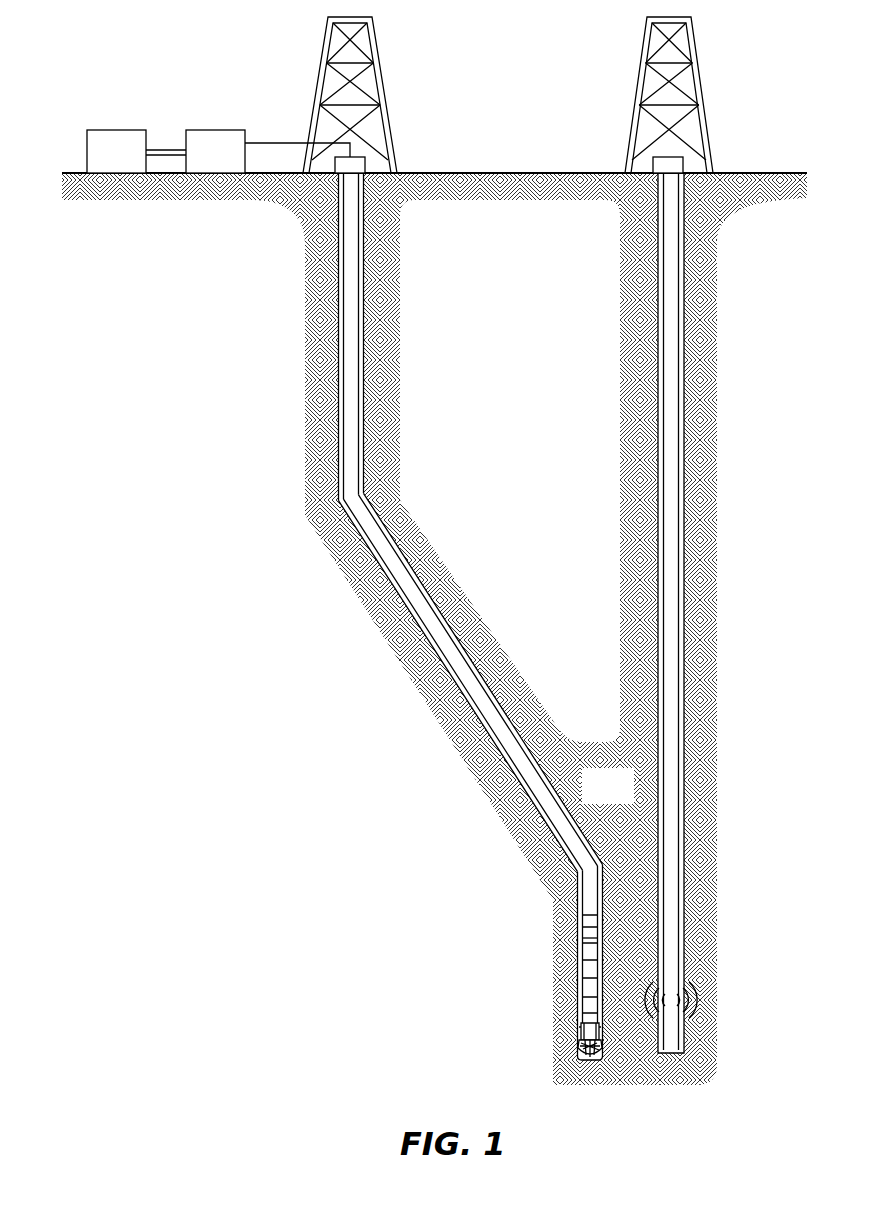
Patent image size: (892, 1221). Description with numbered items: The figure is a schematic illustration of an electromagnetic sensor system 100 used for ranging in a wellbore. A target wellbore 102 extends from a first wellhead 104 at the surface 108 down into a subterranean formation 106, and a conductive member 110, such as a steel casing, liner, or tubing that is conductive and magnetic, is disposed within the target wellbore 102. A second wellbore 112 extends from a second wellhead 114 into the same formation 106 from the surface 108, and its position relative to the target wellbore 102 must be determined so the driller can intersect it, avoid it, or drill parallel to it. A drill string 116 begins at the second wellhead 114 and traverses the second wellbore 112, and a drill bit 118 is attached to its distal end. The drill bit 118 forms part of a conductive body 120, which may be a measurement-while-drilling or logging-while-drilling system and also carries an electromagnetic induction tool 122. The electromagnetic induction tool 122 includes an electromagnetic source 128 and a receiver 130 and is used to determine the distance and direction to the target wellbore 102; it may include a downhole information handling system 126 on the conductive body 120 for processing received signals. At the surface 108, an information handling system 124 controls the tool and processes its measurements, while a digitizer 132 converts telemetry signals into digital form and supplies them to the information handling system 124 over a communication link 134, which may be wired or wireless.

The electromagnetic sensor system 100 is at (434, 556).
The target wellbore 102 is at (684, 326).
The first wellhead 104 is at (685, 165).
The subterranean formation 106 is at (630, 803).
The surface 108 is at (515, 172).
The conductive member 110 is at (679, 478).
The second wellbore 112 is at (338, 310).
The second wellhead 114 is at (366, 164).
The drill string 116 is at (400, 588).
The drill bit 118 is at (553, 1067).
The conductive body 120 is at (526, 979).
The electromagnetic induction tool 122 is at (582, 958).
The information handling system 124 is at (137, 168).
The downhole information handling system 126 is at (582, 915).
The electromagnetic source 128 is at (582, 938).
The receiver 130 is at (583, 1008).
The digitizer 132 is at (236, 168).
The communication link 134 is at (168, 151).